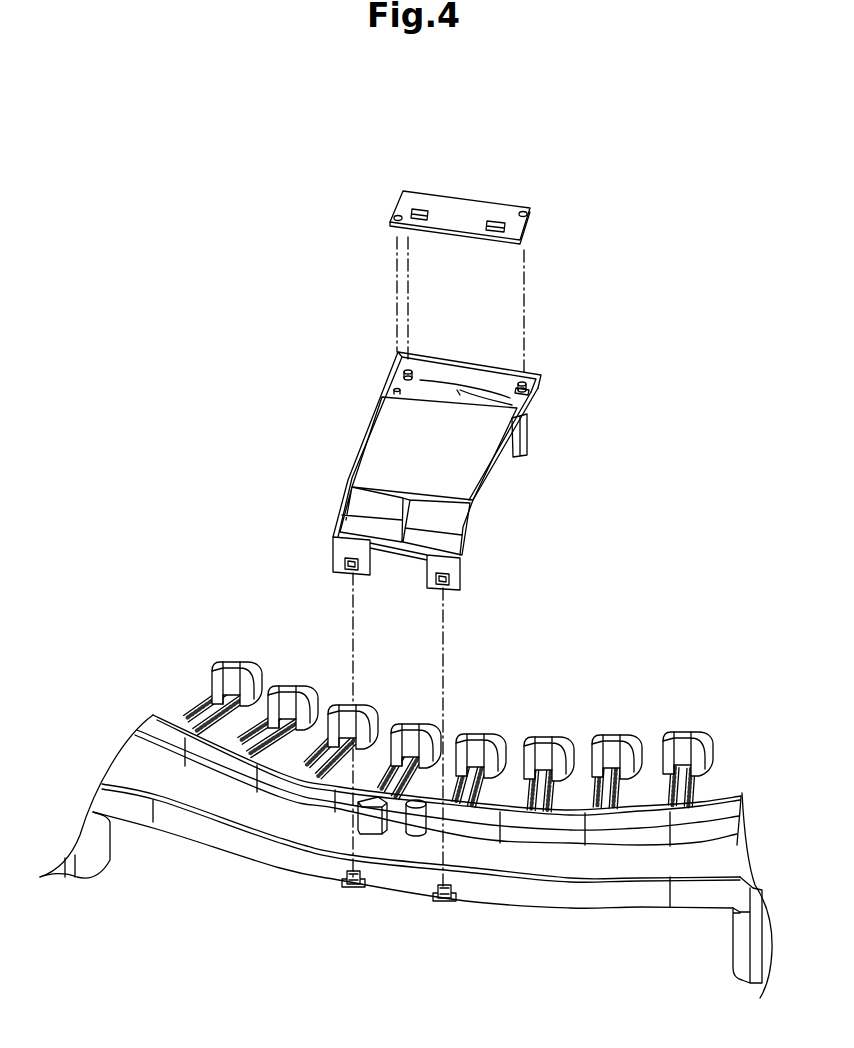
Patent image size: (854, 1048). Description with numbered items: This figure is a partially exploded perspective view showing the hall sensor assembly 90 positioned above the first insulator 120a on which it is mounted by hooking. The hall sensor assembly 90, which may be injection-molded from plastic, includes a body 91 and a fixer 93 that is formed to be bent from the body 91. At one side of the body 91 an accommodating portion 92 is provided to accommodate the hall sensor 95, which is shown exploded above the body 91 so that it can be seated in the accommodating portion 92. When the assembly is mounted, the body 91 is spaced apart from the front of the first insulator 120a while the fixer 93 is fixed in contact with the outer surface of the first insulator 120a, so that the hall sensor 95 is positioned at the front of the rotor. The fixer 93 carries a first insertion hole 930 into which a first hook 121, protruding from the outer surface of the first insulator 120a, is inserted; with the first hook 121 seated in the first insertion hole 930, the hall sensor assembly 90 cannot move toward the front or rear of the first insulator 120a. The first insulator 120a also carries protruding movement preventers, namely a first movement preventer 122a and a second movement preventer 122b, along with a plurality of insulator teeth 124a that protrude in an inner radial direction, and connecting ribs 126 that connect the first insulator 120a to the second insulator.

The hall sensor assembly 90 is at (419, 612).
The body 91 is at (380, 447).
The accommodating portion 92 is at (524, 392).
The fixer 93 is at (340, 552).
The first insertion hole 930 is at (342, 572).
The hall sensor 95 is at (463, 208).
The first insulator 120a is at (559, 904).
The first hook 121 is at (347, 887).
The first movement preventer 122a is at (415, 835).
The second movement preventer 122b is at (370, 820).
The insulator teeth 124a is at (697, 765).
The connecting ribs 126 is at (100, 857).